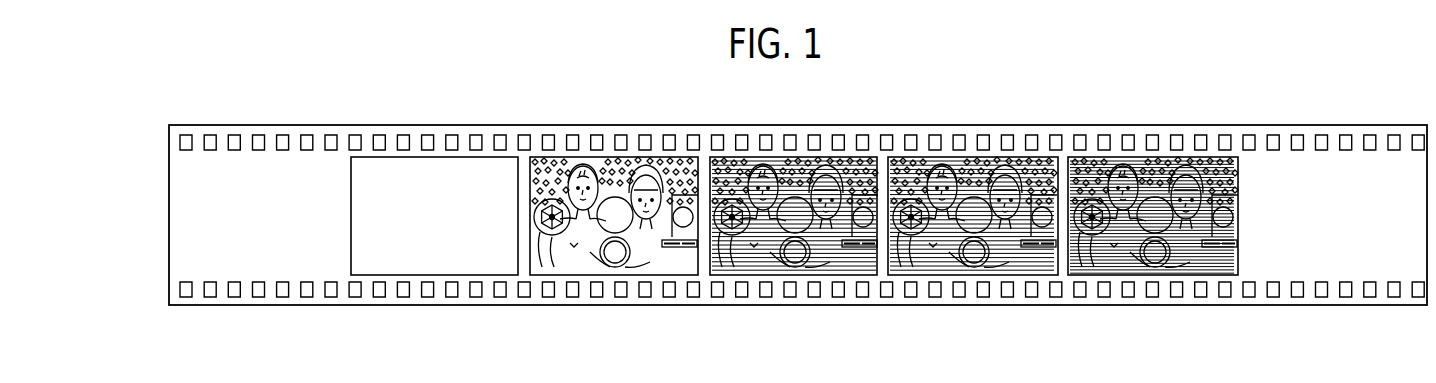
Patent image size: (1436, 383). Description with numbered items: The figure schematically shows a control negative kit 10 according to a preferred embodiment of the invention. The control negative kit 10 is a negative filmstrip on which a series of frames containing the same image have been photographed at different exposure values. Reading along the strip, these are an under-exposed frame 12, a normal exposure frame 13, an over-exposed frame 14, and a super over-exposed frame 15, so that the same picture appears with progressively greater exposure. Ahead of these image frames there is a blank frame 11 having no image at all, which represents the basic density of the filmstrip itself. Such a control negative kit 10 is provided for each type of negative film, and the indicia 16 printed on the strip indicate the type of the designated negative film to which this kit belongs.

The control negative kit 10 is at (747, 126).
The blank frame 11 is at (463, 277).
The under-exposed frame 12 is at (627, 277).
The normal exposure frame 13 is at (823, 277).
The over-exposed frame 14 is at (992, 277).
The super over-exposed frame 15 is at (1183, 277).
The indicia 16 is at (310, 208).